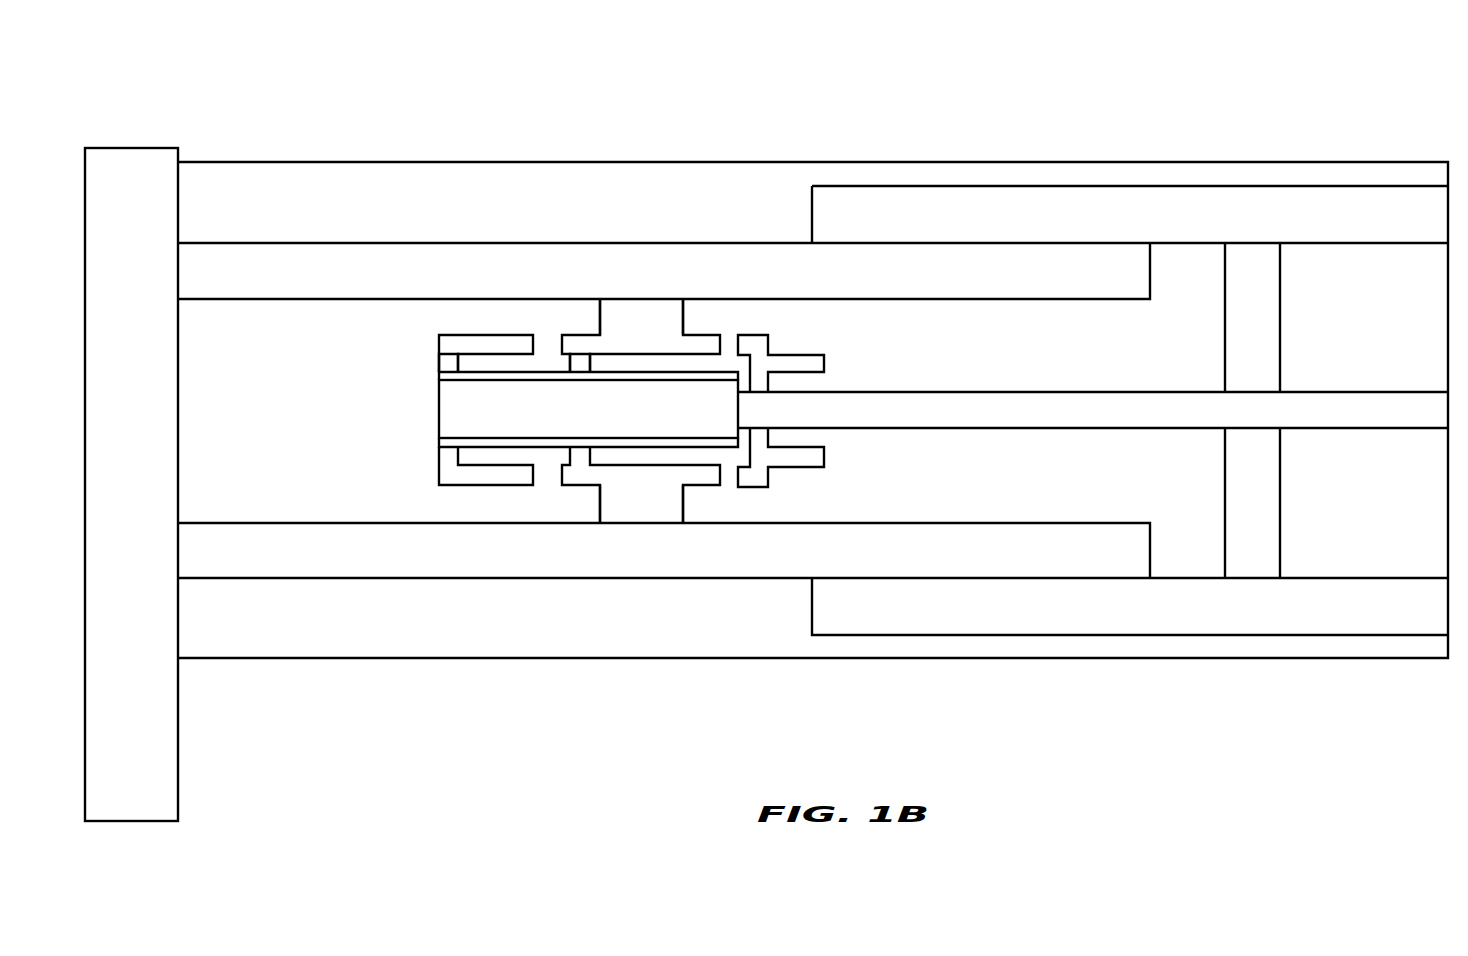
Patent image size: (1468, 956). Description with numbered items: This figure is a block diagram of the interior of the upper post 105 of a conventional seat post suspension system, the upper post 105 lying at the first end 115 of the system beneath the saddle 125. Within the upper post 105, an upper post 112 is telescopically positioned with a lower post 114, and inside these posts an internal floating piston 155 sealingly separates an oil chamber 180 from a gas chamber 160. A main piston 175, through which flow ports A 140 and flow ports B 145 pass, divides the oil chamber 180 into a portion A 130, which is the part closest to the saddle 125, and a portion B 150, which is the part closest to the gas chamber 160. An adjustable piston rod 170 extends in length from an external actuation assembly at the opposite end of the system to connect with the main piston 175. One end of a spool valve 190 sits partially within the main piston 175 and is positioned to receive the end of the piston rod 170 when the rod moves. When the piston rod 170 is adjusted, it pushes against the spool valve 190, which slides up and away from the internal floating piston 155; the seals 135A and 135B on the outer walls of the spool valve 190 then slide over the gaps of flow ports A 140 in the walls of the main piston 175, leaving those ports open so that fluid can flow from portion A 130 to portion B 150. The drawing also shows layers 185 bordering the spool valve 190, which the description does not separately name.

The upper post 105 is at (185, 75).
The upper post 112 is at (410, 563).
The lower post 114 is at (1064, 619).
The first end 115 is at (178, 158).
The saddle 125 is at (117, 424).
The portion A 130 is at (227, 355).
The seal 135A is at (437, 365).
The seal 135B is at (568, 368).
The flow ports A 140 is at (540, 335).
The flow ports B 145 is at (742, 335).
The portion B 150 is at (907, 359).
The internal floating piston (IFP) 155 is at (1234, 359).
The gas chamber 160 is at (1344, 359).
The adjustable piston rod 170 is at (1299, 422).
The main piston 175 is at (622, 509).
The oil chamber 180 is at (185, 128).
The gap layers 185 is at (438, 442).
The spool valve 190 is at (572, 423).